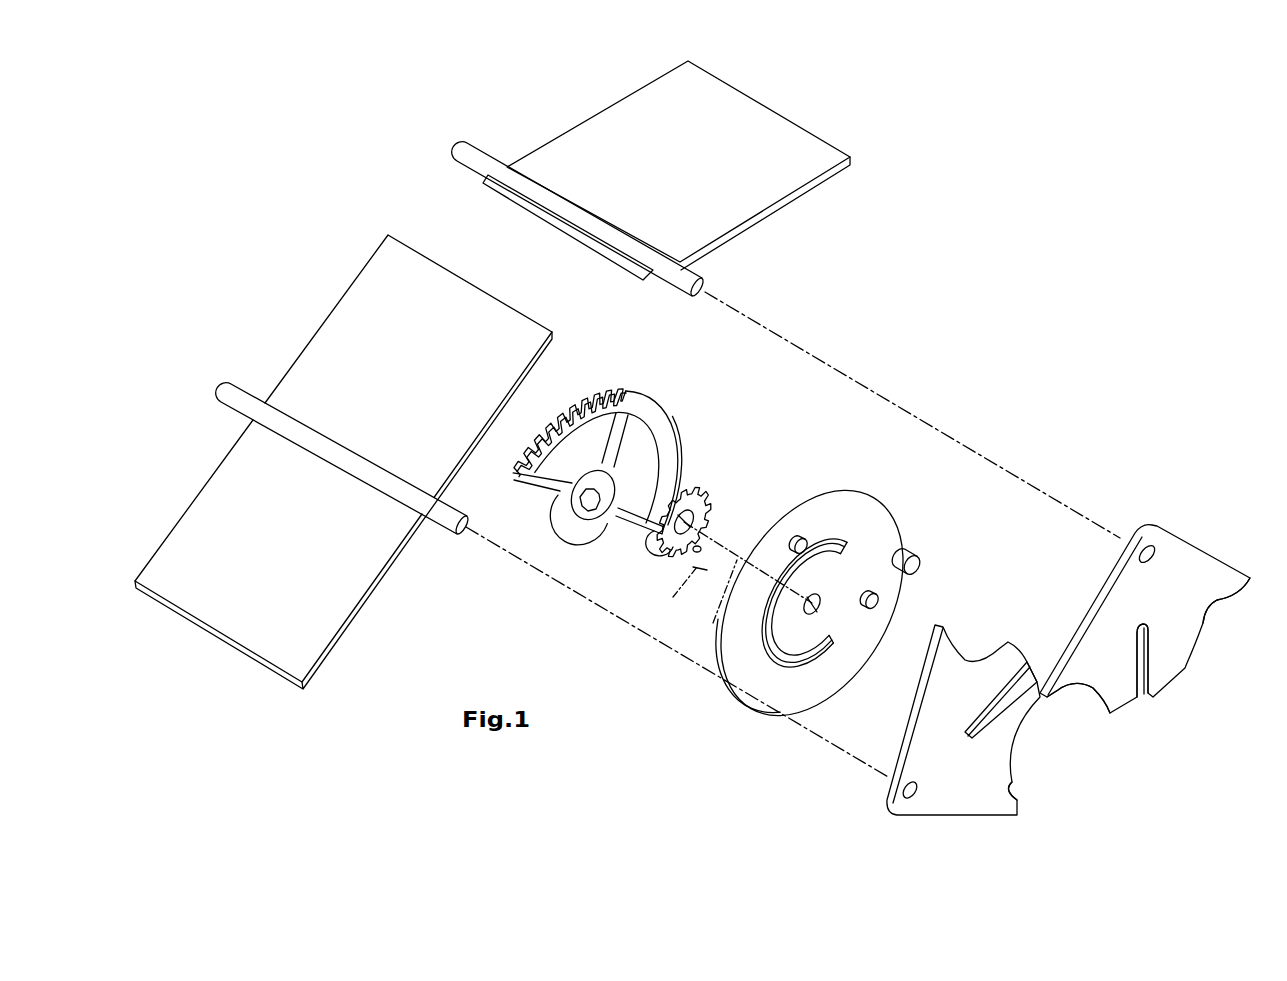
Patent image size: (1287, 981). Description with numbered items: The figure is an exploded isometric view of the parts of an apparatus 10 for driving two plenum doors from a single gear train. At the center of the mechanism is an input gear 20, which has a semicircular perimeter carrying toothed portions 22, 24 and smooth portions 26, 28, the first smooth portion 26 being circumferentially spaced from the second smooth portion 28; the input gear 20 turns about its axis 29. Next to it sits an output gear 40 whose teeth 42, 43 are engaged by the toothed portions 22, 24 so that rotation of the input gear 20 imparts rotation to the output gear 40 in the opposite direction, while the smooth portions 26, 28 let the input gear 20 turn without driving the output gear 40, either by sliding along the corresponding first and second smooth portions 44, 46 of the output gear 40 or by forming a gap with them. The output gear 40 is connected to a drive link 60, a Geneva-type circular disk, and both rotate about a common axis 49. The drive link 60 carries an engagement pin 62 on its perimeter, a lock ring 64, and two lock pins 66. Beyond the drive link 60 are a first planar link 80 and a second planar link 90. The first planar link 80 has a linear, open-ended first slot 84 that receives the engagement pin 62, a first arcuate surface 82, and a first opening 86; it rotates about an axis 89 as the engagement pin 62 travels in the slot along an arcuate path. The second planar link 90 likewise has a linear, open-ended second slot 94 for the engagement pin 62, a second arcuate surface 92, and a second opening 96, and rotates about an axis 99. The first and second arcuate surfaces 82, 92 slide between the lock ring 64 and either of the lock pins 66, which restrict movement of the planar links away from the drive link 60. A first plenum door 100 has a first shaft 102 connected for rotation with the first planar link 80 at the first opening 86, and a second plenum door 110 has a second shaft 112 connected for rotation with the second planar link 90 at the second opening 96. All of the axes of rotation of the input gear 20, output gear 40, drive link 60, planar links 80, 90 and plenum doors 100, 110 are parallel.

The apparatus 10 is at (378, 118).
The input gear 20 is at (609, 482).
The toothed portion 22 is at (601, 387).
The toothed portion 24 is at (514, 473).
The first smooth portion 26 is at (677, 442).
The second smooth portion 28 is at (533, 438).
The axis 29 is at (683, 595).
The output gear 40 is at (710, 527).
The teeth 42 is at (695, 490).
The teeth 43 is at (702, 548).
The first smooth portion 44 is at (650, 545).
The second smooth portion 46 is at (709, 519).
The axis 49 is at (748, 585).
The drive link 60 is at (789, 605).
The engagement pin 62 is at (902, 550).
The lock ring 64 is at (745, 693).
The lock pins 66 is at (801, 538).
The first planar link 80 is at (1150, 610).
The first arcuate surface 82 is at (1212, 617).
The first slot 84 is at (1140, 663).
The first opening 86 is at (1155, 530).
The axis 89 is at (1094, 520).
The second planar link 90 is at (962, 735).
The second arcuate surface 92 is at (1027, 783).
The second slot 94 is at (1027, 656).
The second opening 96 is at (906, 802).
The axis 99 is at (838, 751).
The first plenum door 100 is at (800, 106).
The first shaft 102 is at (689, 281).
The second plenum door 110 is at (266, 692).
The second shaft 112 is at (436, 520).